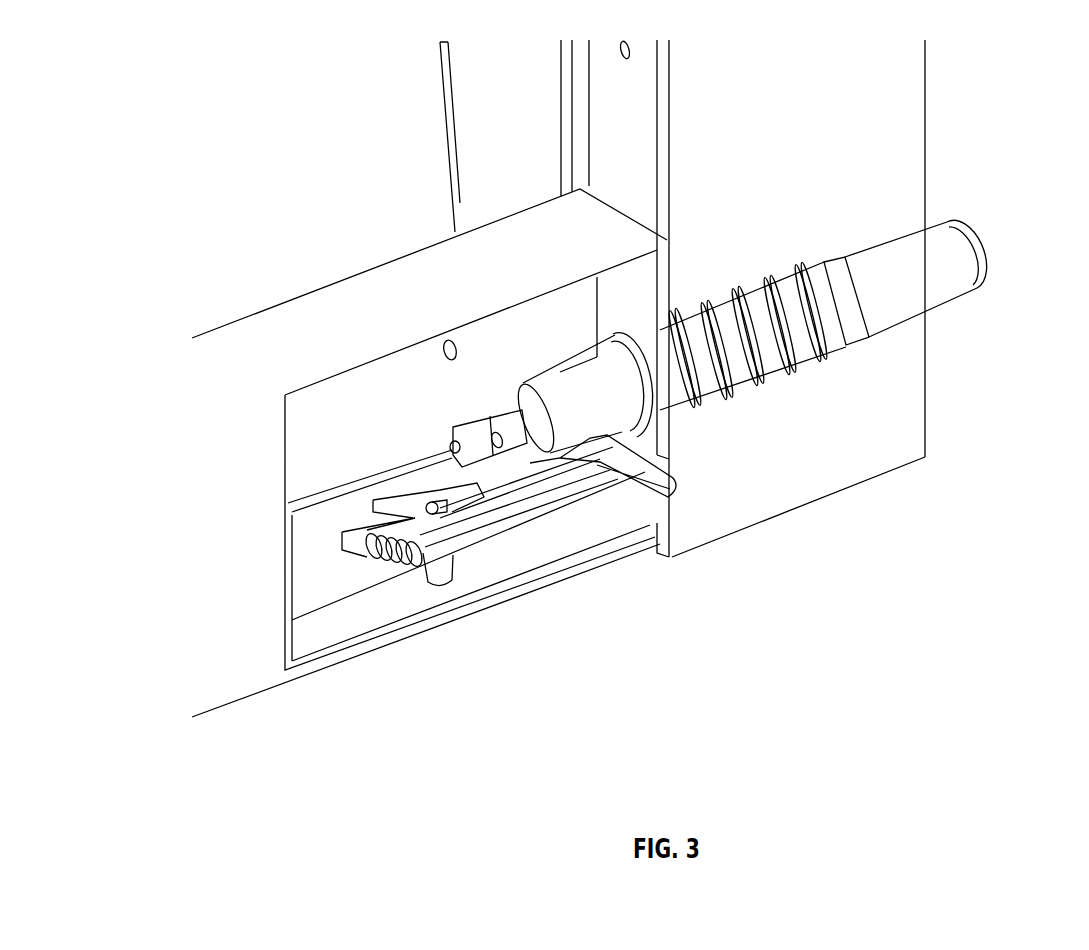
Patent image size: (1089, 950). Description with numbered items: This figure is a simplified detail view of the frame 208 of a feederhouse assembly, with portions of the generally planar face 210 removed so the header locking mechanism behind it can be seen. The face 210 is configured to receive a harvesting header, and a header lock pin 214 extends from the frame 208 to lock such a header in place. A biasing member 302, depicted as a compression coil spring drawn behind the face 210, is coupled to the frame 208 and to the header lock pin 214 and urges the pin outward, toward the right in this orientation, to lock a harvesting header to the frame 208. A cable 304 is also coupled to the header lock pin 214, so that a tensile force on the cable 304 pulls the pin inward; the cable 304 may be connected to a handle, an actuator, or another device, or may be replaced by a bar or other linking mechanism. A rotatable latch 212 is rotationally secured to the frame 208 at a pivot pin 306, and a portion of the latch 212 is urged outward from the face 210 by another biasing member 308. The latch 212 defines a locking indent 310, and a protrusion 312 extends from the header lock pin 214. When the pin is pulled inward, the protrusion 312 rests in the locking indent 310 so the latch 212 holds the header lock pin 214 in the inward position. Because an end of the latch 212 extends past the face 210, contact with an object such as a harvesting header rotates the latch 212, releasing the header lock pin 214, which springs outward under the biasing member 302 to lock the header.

The frame 208 is at (925, 133).
The face 210 is at (872, 462).
The latch 212 is at (673, 553).
The header lock pin 214 is at (968, 287).
The biasing member 302 is at (830, 357).
The cable 304 is at (308, 502).
The pivot pin 306 is at (433, 580).
The biasing member 308 is at (390, 567).
The locking indent 310 is at (493, 520).
The protrusion 312 is at (560, 480).